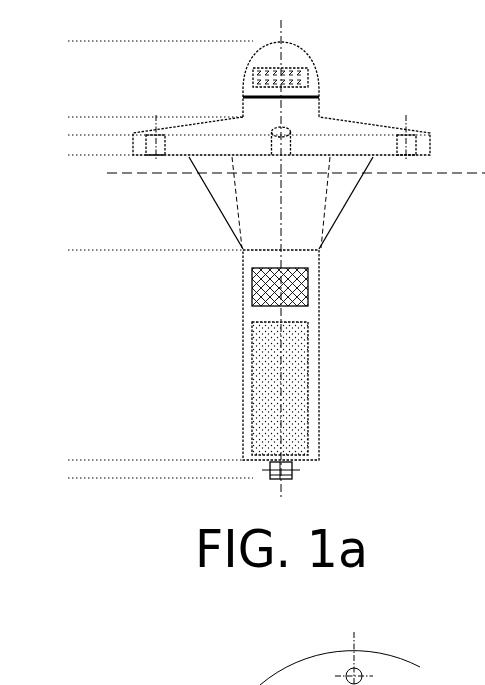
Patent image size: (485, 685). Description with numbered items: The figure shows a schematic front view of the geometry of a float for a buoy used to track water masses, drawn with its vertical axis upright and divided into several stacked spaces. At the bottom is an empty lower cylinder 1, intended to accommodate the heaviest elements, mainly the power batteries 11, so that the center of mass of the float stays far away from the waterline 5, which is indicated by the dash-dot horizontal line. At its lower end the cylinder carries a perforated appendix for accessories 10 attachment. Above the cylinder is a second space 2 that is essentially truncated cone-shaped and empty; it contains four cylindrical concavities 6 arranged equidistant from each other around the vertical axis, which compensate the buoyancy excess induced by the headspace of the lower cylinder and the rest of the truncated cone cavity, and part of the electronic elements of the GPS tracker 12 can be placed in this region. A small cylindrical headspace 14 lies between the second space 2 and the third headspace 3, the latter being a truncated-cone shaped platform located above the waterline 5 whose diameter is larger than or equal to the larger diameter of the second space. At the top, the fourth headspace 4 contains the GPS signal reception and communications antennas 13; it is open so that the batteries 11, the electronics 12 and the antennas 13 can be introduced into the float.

The lower cylinder 1 is at (174, 355).
The truncated cone-shaped second space 2 is at (201, 202).
The third headspace 3 is at (230, 137).
The fourth headspace 4 is at (174, 79).
The waterline 5 is at (455, 173).
The cylindrical concavities 6 is at (227, 203).
The perforated appendix for accessories 10 is at (160, 467).
The power batteries 11 is at (300, 412).
The electronic elements of the GPS tracker 12 is at (307, 293).
The GPS signal reception and communications antennas 13 is at (307, 83).
The small cylindrical headspace 14 is at (155, 144).